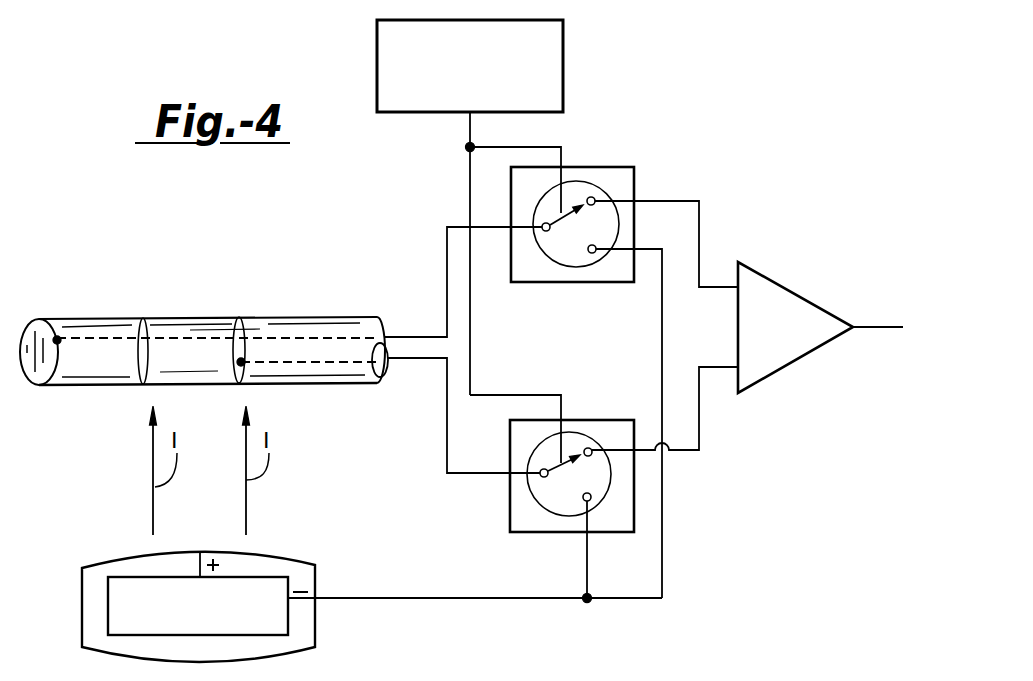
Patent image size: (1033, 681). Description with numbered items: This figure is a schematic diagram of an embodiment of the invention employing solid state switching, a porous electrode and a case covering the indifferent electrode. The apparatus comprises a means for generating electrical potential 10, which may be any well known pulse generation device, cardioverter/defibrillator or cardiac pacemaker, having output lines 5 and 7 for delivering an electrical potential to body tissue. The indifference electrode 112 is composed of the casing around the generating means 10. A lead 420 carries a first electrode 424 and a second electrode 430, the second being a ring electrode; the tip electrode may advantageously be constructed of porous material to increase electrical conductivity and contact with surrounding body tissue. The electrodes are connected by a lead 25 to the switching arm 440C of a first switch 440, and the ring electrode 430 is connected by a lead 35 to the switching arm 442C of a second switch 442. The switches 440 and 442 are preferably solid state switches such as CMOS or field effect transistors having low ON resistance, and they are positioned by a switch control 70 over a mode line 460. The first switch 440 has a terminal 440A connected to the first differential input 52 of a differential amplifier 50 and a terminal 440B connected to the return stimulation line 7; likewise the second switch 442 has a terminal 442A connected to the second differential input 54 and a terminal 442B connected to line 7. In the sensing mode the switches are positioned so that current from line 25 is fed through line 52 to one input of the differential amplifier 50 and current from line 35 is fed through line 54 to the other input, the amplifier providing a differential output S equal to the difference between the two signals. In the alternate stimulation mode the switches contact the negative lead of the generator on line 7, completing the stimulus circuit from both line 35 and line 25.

The switch control 70 is at (563, 65).
The mode line 460 is at (468, 125).
The lead 420 is at (204, 286).
The first electrode 424 is at (38, 320).
The second electrode 430 is at (178, 318).
The lead 25 is at (412, 335).
The lead 35 is at (412, 360).
The first switch 440 is at (605, 228).
The terminal A of first switch 440A is at (592, 197).
The terminal B of first switch 440B is at (592, 253).
The switching arm of first switch 440C is at (568, 210).
The second switch 442 is at (588, 459).
The terminal A of second switch 442A is at (588, 447).
The terminal B of second switch 442B is at (588, 501).
The switching arm of second switch 442C is at (565, 462).
The first differential input 52 is at (702, 260).
The second differential input 54 is at (685, 452).
The differential amplifier 50 is at (783, 367).
The indifference electrode 112 is at (315, 570).
The means for generating electrical potential 10 is at (275, 577).
The output line 5 is at (200, 577).
The output line 7 is at (610, 598).